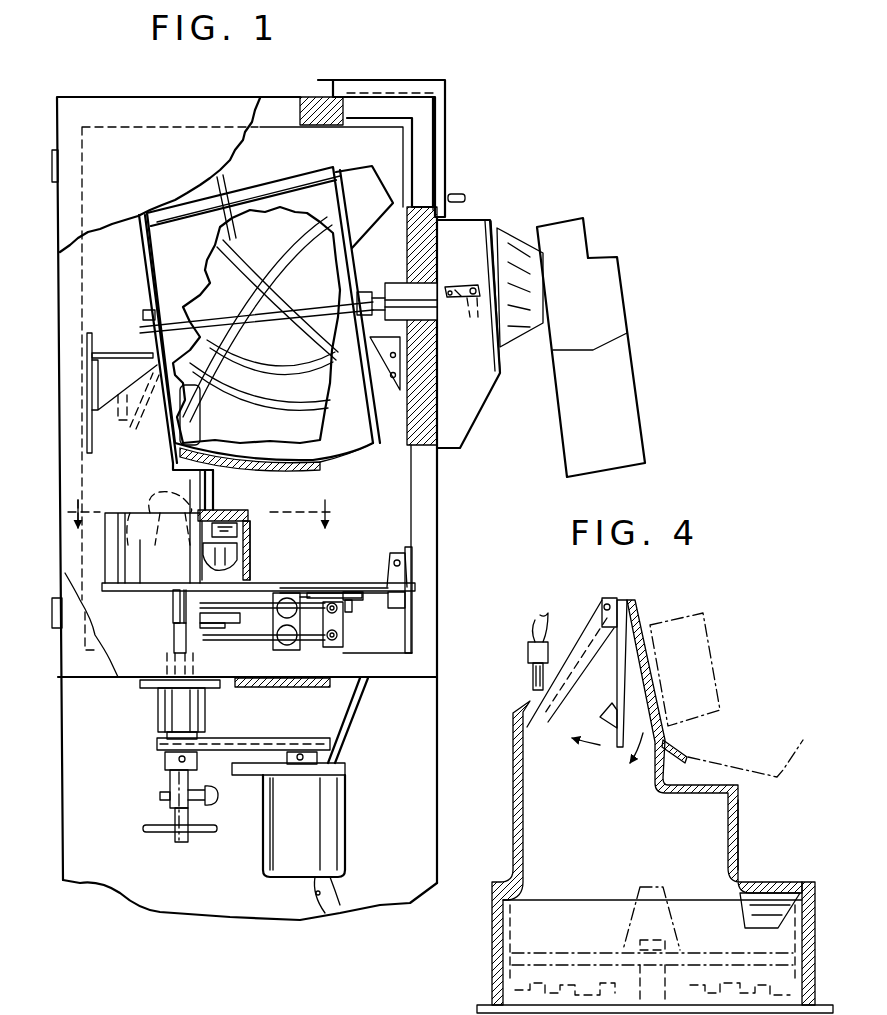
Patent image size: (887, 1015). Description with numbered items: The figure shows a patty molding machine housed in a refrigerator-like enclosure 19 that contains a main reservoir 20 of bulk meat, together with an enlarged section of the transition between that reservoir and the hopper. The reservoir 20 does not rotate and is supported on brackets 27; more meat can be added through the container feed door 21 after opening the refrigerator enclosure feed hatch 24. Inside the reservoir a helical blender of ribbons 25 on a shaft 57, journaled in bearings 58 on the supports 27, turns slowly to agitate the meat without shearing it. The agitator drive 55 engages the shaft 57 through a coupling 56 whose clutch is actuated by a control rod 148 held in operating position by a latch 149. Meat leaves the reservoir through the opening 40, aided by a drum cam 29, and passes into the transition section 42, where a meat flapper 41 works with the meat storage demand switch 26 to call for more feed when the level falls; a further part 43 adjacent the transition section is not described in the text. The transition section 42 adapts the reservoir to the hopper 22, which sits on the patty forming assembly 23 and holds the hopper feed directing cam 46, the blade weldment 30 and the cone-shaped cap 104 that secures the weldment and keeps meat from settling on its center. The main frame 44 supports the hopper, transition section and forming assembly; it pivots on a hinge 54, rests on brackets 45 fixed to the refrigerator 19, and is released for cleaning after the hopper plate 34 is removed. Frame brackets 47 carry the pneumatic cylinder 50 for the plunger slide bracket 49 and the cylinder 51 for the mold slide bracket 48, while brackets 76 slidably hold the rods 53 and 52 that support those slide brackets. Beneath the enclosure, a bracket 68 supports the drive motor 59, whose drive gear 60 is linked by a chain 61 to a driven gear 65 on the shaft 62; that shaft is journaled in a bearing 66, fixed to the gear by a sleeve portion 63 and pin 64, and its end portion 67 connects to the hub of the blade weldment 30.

In FIG. 1, the refrigerator-like enclosure 19 is at (437, 633).
In FIG. 1, the main reservoir 20 is at (278, 160).
In FIG. 1, the container feed door 21 is at (382, 170).
In FIG. 1, the hopper 22 is at (248, 578).
In FIG. 4, the hopper 22 is at (810, 896).
In FIG. 1, the patty forming assembly 23 is at (200, 621).
In FIG. 1, the refrigerator enclosure feed hatch 24 is at (447, 88).
In FIG. 1, the ribbons 25 is at (227, 268).
In FIG. 1, the meat storage demand switch 26 is at (119, 420).
In FIG. 4, the meat storage demand switch 26 is at (528, 668).
In FIG. 1, the brackets 27 is at (90, 392).
In FIG. 1, the drum cam 29 is at (198, 428).
In FIG. 4, the drum cam 29 is at (712, 658).
In FIG. 1, the blade weldment 30 is at (252, 533).
In FIG. 1, the hopper plate 34 is at (258, 590).
In FIG. 1, the opening 40 is at (170, 440).
In FIG. 4, the opening 40 is at (645, 632).
In FIG. 1, the meat flapper 41 is at (152, 388).
In FIG. 4, the meat flapper 41 is at (615, 692).
In FIG. 1, the transition section 42 is at (213, 490).
In FIG. 4, the transition section 42 is at (740, 840).
In FIG. 1, the lip 43 is at (207, 463).
In FIG. 4, the lip 43 is at (715, 780).
In FIG. 1, the main frame 44 is at (340, 593).
In FIG. 1, the brackets 45 is at (405, 597).
In FIG. 1, the hopper feed directing cam 46 is at (248, 512).
In FIG. 4, the hopper feed directing cam 46 is at (762, 898).
In FIG. 1, the brackets 47 is at (302, 594).
In FIG. 1, the slide bracket 48 is at (303, 622).
In FIG. 1, the plunger slide bracket 49 is at (313, 612).
In FIG. 1, the pneumatic cylinder 50 is at (273, 615).
In FIG. 1, the cylinder 51 is at (271, 640).
In FIG. 1, the rod 52 is at (343, 646).
In FIG. 1, the rod 53 is at (348, 617).
In FIG. 1, the hinge 54 is at (398, 555).
In FIG. 1, the agitator drive 55 is at (612, 267).
In FIG. 1, the coupling 56 is at (433, 285).
In FIG. 1, the shaft 57 is at (382, 298).
In FIG. 1, the bearings 58 is at (368, 290).
In FIG. 1, the drive motor 59 is at (337, 847).
In FIG. 1, the drive gear 60 is at (302, 760).
In FIG. 1, the chain 61 is at (218, 753).
In FIG. 1, the shaft 62 is at (167, 832).
In FIG. 1, the sleeve portion 63 is at (168, 802).
In FIG. 1, the pin 64 is at (163, 795).
In FIG. 1, the driven gear 65 is at (165, 758).
In FIG. 1, the bearing 66 is at (177, 710).
In FIG. 1, the end portion 67 is at (177, 605).
In FIG. 1, the bracket 68 is at (350, 738).
In FIG. 1, the brackets 76 is at (352, 604).
In FIG. 1, the cone-shaped cap 104 is at (168, 508).
In FIG. 4, the cone-shaped cap 104 is at (643, 882).
In FIG. 1, the control rod 148 is at (457, 298).
In FIG. 1, the latch 149 is at (479, 287).